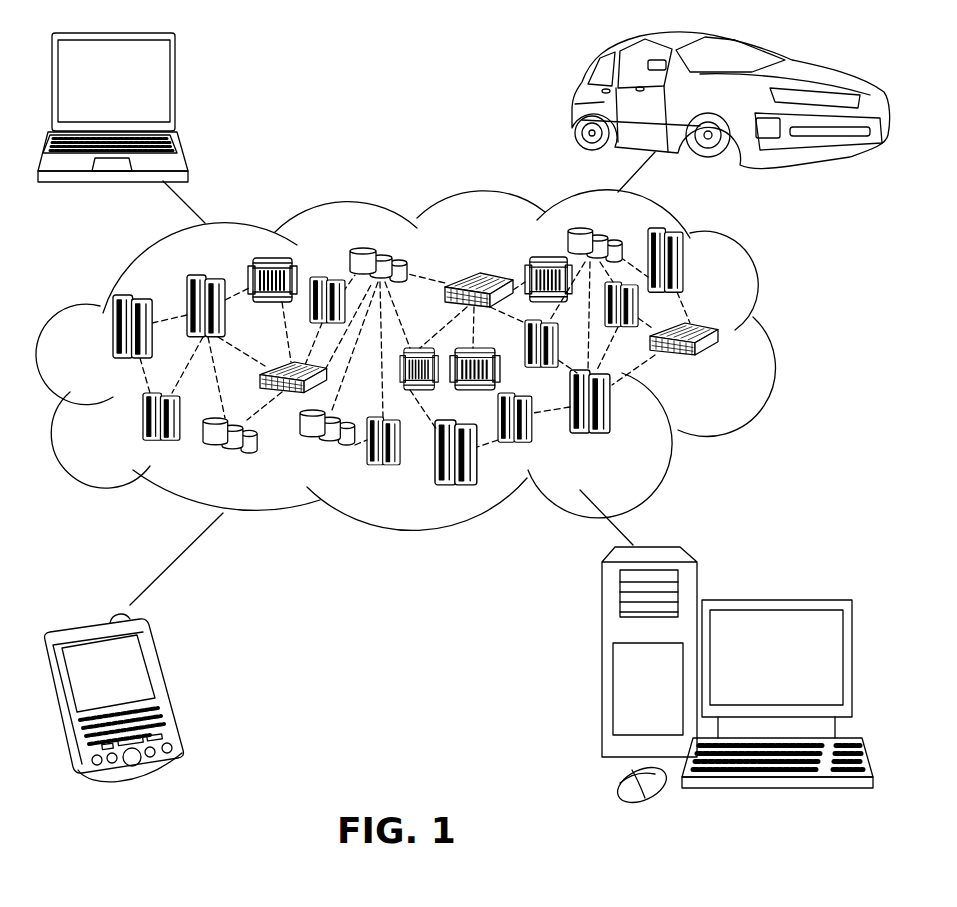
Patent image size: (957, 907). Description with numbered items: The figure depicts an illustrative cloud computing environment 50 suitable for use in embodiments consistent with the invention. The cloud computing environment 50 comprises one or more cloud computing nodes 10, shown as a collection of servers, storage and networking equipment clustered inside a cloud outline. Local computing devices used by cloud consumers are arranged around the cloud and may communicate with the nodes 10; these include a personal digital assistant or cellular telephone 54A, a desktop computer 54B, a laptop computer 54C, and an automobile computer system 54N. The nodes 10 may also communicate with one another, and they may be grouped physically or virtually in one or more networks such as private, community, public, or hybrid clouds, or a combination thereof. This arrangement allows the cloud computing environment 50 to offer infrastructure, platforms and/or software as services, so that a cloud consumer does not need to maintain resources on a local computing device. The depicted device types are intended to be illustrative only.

The cloud computing environment 50 is at (772, 335).
The cloud computing node 10 is at (722, 389).
The personal digital assistant (PDA) or cellular telephone 54A is at (167, 685).
The desktop computer 54B is at (772, 600).
The laptop computer 54C is at (175, 89).
The automobile computer system 54N is at (575, 103).